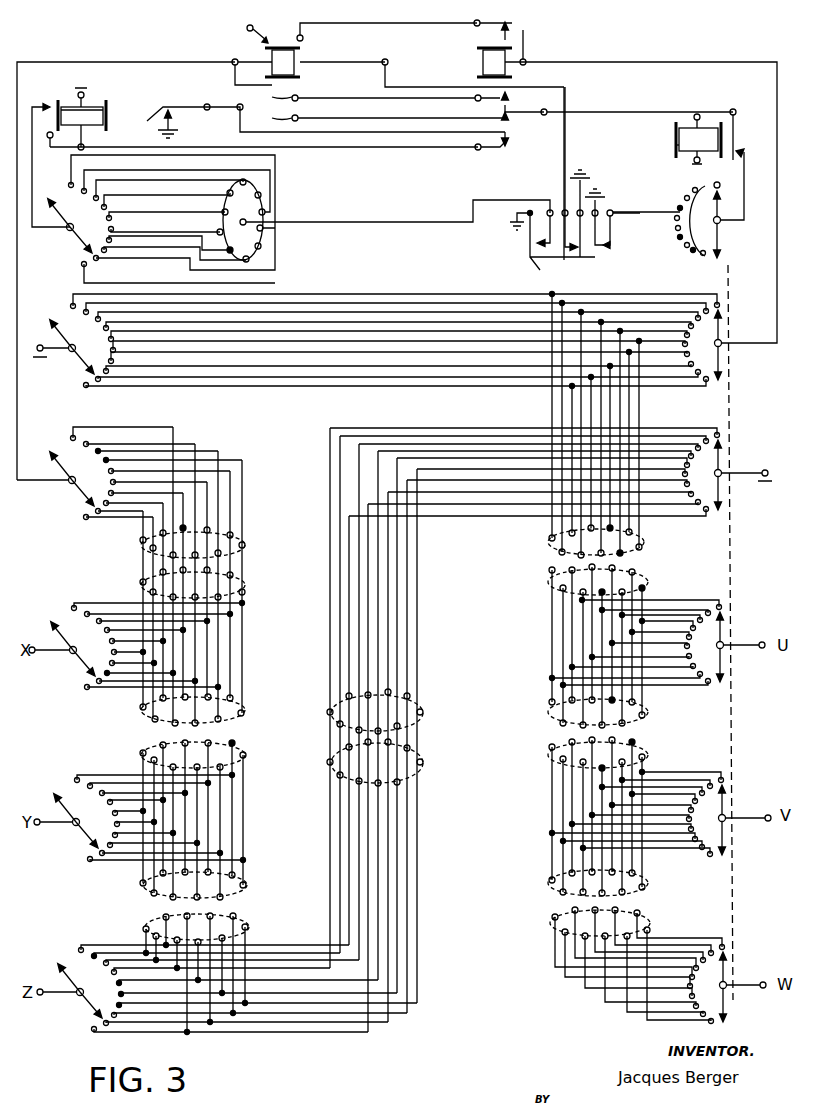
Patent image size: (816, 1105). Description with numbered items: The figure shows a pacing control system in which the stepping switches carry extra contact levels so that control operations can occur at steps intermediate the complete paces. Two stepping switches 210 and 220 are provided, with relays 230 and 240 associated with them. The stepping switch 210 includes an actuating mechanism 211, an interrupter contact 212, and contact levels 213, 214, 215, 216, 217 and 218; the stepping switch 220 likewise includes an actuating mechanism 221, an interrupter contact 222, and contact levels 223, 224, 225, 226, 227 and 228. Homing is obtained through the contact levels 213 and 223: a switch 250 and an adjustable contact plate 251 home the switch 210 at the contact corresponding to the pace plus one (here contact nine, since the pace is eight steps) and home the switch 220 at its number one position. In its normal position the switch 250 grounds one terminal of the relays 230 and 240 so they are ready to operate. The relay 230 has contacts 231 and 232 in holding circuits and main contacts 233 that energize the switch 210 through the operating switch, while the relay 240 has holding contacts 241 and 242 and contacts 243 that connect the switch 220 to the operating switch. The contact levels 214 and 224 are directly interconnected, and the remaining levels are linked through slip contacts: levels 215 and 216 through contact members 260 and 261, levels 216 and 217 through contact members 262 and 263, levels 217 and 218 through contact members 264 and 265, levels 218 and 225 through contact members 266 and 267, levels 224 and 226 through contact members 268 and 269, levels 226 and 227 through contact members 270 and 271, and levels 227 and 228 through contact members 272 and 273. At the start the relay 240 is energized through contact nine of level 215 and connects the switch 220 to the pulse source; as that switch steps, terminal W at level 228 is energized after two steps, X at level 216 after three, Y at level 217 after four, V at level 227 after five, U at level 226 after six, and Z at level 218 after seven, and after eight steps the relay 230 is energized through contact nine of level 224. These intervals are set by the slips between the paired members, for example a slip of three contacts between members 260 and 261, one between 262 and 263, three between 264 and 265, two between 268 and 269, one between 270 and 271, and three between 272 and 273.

The stepping switch 210 is at (68, 102).
The actuating mechanism 211 is at (103, 112).
The interrupter contact 212 is at (46, 120).
The contact level 213 is at (70, 240).
The contact level 214 is at (72, 362).
The contact level 215 is at (72, 492).
The contact level 216 is at (74, 674).
The contact level 217 is at (78, 836).
The contact level 218 is at (82, 1006).
The stepping switch 220 is at (712, 102).
The actuating mechanism 221 is at (678, 147).
The interrupter contact 222 is at (738, 152).
The contact level 223 is at (722, 227).
The contact level 224 is at (723, 340).
The contact level 225 is at (723, 465).
The contact level 226 is at (726, 663).
The contact level 227 is at (728, 828).
The contact level 228 is at (729, 998).
The relay 230 is at (473, 53).
The holding contact 231 is at (514, 28).
The holding contact 232 is at (527, 66).
The main contact 233 is at (508, 148).
The relay 240 is at (262, 54).
The holding contact 241 is at (303, 36).
The holding contact 242 is at (302, 95).
The contact 243 is at (302, 116).
The switch 250 is at (527, 256).
The adjustable contact plate 251 is at (272, 232).
The contact member 260 is at (238, 548).
The contact member 261 is at (240, 586).
The contact member 262 is at (240, 706).
The contact member 263 is at (240, 760).
The contact member 264 is at (243, 878).
The contact member 265 is at (246, 924).
The contact member 266 is at (415, 704).
The contact member 267 is at (422, 776).
The contact member 268 is at (636, 556).
The contact member 269 is at (642, 590).
The contact member 270 is at (640, 724).
The contact member 271 is at (645, 762).
The contact member 272 is at (645, 880).
The contact member 273 is at (645, 928).